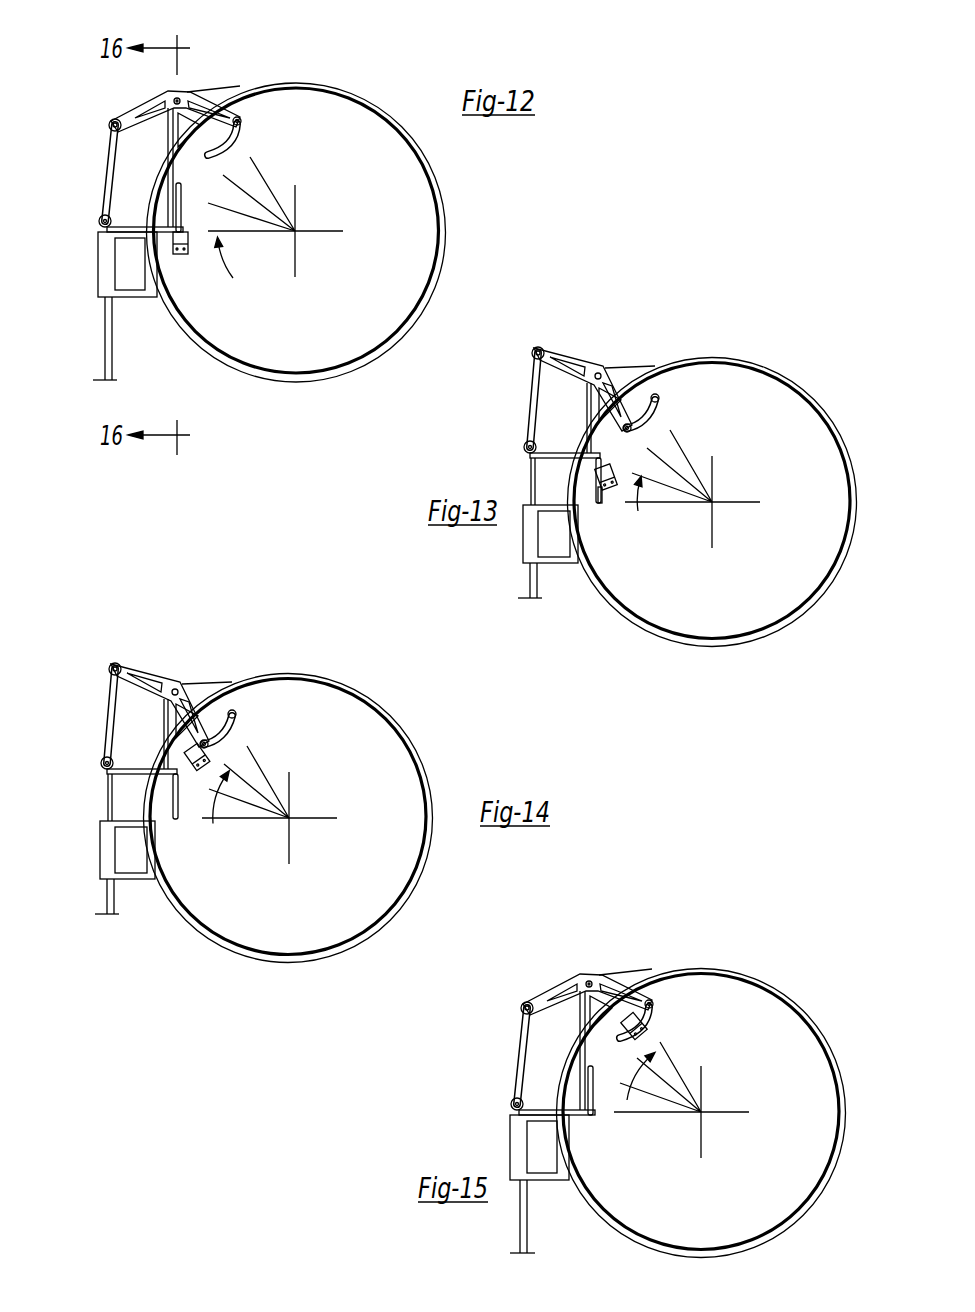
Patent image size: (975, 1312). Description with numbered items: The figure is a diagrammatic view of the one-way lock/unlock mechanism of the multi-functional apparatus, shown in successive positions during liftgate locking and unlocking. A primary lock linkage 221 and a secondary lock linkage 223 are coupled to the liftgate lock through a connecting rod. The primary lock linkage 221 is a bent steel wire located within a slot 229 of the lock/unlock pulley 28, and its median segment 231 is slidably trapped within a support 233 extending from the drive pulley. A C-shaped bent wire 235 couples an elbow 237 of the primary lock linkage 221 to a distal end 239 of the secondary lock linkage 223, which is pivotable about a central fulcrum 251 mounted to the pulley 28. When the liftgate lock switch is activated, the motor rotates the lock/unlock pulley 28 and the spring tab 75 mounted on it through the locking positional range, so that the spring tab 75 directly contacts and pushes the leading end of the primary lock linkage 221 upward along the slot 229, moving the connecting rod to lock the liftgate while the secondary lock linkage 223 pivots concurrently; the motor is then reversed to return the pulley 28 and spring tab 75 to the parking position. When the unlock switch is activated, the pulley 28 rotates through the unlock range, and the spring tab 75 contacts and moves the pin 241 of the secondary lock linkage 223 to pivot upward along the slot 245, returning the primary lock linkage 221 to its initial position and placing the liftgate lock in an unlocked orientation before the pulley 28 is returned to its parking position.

In FIG. 12, the lock/unlock pulley 28 is at (356, 128).
In FIG. 13, the lock/unlock pulley 28 is at (701, 604).
In FIG. 14, the lock/unlock pulley 28 is at (362, 754).
In FIG. 15, the lock/unlock pulley 28 is at (727, 1001).
In FIG. 12, the spring tab 75 is at (177, 254).
In FIG. 13, the spring tab 75 is at (608, 467).
In FIG. 14, the spring tab 75 is at (206, 755).
In FIG. 15, the spring tab 75 is at (655, 1012).
In FIG. 12, the primary lock linkage 221 is at (128, 212).
In FIG. 13, the primary lock linkage 221 is at (535, 397).
In FIG. 14, the primary lock linkage 221 is at (152, 745).
In FIG. 15, the primary lock linkage 221 is at (561, 1053).
In FIG. 12, the secondary lock linkage 223 is at (145, 110).
In FIG. 13, the secondary lock linkage 223 is at (560, 360).
In FIG. 14, the secondary lock linkage 223 is at (133, 676).
In FIG. 15, the secondary lock linkage 223 is at (548, 998).
In FIG. 12, the slot 229 is at (178, 196).
In FIG. 12, the median segment 231 is at (110, 333).
In FIG. 12, the support 233 is at (108, 277).
In FIG. 12, the C-shaped bent wire 235 is at (110, 166).
In FIG. 12, the elbow 237 is at (99, 218).
In FIG. 12, the distal end 239 is at (109, 125).
In FIG. 12, the pin 241 is at (238, 119).
In FIG. 12, the slot 245 is at (250, 142).
In FIG. 13, the slot 245 is at (659, 402).
In FIG. 14, the slot 245 is at (233, 712).
In FIG. 15, the slot 245 is at (634, 1022).
In FIG. 12, the central fulcrum 251 is at (182, 92).